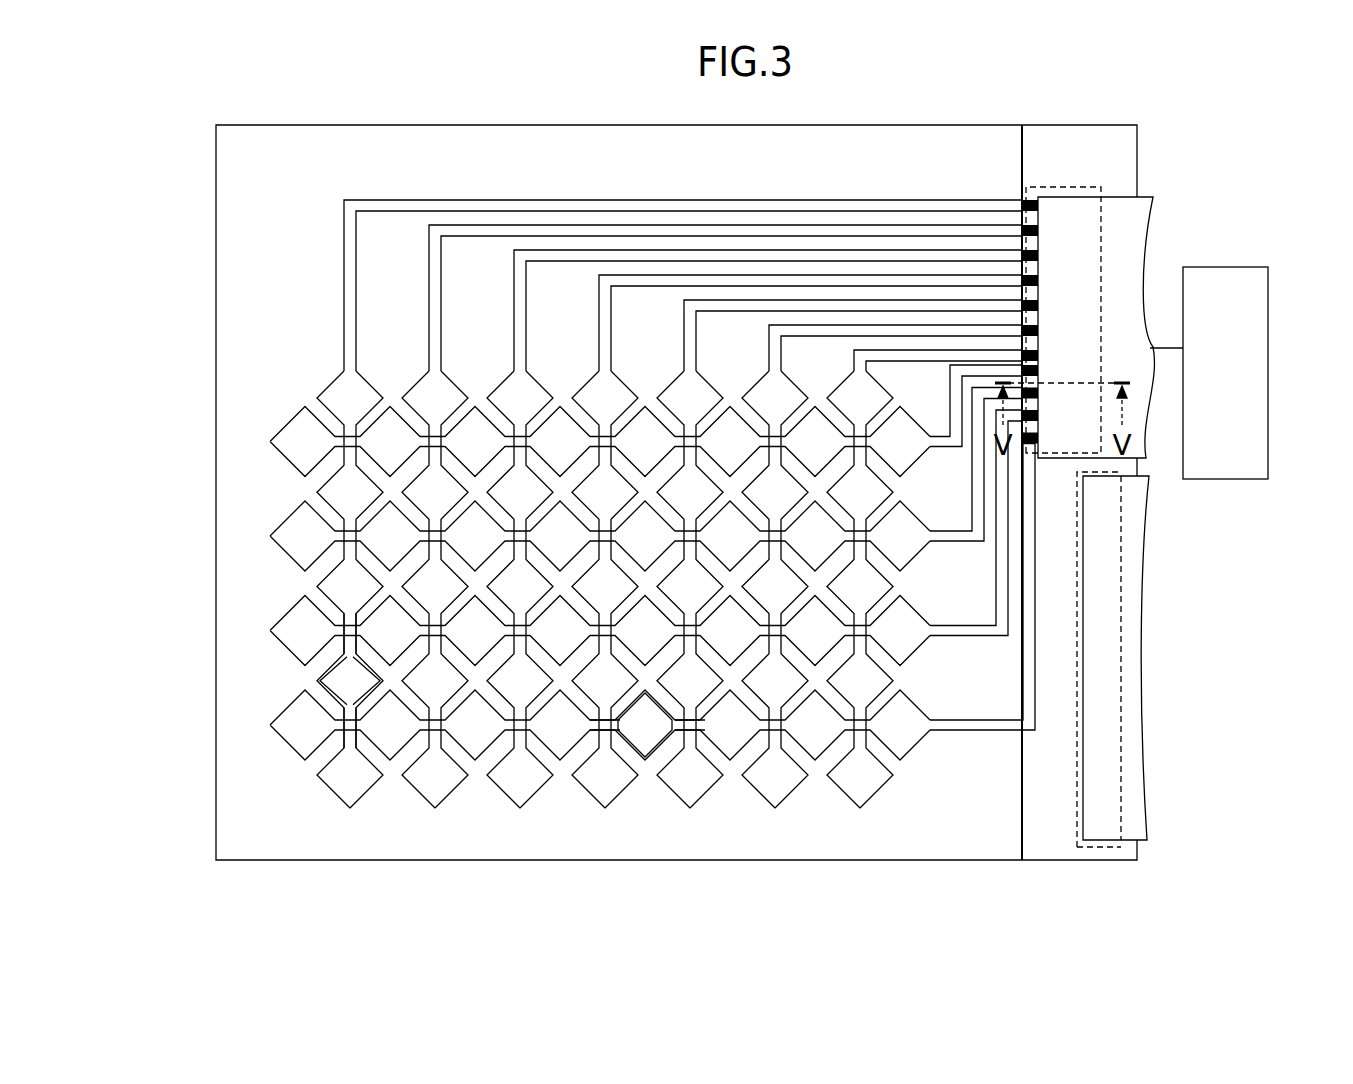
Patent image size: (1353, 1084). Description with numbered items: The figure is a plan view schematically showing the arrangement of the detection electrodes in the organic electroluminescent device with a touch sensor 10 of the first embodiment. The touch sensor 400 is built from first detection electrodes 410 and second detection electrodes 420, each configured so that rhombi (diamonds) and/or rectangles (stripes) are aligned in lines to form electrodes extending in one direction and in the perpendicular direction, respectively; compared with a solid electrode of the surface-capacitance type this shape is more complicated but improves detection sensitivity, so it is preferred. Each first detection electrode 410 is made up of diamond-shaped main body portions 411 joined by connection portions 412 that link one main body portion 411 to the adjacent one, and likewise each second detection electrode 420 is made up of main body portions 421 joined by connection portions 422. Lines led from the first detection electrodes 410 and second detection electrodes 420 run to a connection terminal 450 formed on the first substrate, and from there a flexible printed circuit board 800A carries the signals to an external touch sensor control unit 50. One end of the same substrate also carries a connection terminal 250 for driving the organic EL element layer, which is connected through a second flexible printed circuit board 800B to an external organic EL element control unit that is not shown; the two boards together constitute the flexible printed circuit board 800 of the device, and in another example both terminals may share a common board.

The organic electroluminescent device with a touch sensor 10 is at (1158, 128).
The touch sensor 400 is at (564, 583).
The first detection electrodes 410 is at (558, 504).
The main body portions 411 is at (325, 688).
The connection portions 412 is at (348, 633).
The second detection electrodes 420 is at (595, 666).
The main body portions 421 is at (651, 758).
The connection portions 422 is at (607, 731).
The connection terminal 450 is at (1058, 187).
The touch sensor control unit 50 is at (1208, 387).
The flexible printed circuit board 800 is at (1172, 518).
The flexible printed circuit board 800A is at (1126, 229).
The flexible printed circuit board 800B is at (1137, 756).
The connection terminal 250 is at (1092, 852).